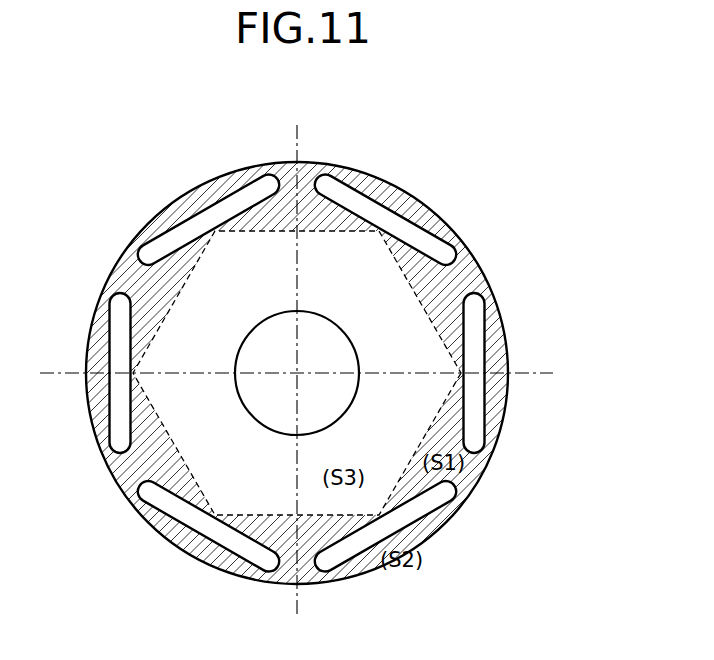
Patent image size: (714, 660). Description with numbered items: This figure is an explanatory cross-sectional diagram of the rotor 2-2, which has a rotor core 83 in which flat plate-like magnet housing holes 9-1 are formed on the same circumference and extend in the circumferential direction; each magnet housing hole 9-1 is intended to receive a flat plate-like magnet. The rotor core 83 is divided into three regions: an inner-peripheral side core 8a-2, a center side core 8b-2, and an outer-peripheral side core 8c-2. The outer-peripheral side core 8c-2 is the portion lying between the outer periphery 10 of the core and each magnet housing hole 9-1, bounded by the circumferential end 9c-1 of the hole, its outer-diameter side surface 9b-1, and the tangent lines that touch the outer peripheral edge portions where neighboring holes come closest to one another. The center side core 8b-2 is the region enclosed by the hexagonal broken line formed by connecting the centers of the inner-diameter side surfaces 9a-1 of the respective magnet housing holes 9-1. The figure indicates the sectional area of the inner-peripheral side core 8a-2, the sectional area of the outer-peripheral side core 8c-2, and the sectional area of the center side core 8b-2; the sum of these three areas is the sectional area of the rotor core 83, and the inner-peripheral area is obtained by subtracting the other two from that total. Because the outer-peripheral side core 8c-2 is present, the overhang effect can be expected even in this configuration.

The outer periphery 10 is at (351, 170).
The magnet housing hole 9-1 is at (208, 189).
The inner-diameter side surface 9a-1 is at (157, 278).
The outer-diameter side surface 9b-1 is at (233, 195).
The circumferential end 9c-1 is at (286, 196).
The inner-peripheral side core 8a-2 is at (468, 465).
The center side core 8b-2 is at (418, 412).
The outer-peripheral side core 8c-2 is at (442, 512).
The rotor core 83 is at (389, 434).
The rotor 2-2 is at (463, 198).